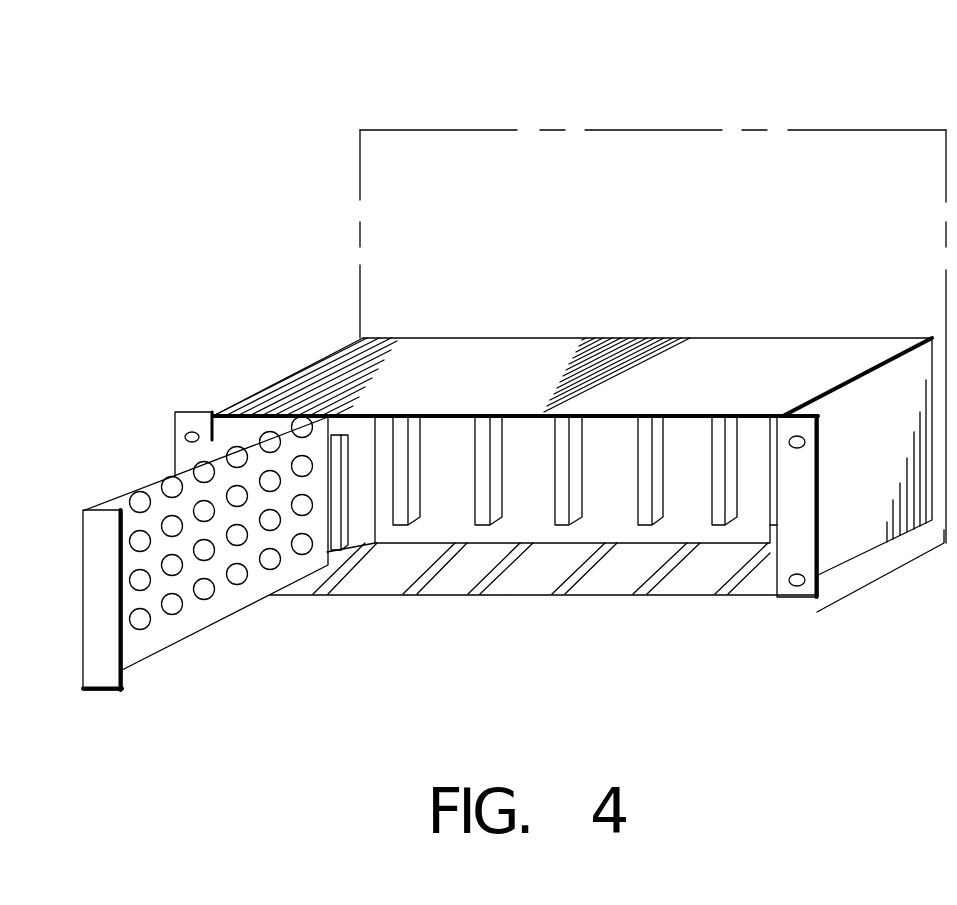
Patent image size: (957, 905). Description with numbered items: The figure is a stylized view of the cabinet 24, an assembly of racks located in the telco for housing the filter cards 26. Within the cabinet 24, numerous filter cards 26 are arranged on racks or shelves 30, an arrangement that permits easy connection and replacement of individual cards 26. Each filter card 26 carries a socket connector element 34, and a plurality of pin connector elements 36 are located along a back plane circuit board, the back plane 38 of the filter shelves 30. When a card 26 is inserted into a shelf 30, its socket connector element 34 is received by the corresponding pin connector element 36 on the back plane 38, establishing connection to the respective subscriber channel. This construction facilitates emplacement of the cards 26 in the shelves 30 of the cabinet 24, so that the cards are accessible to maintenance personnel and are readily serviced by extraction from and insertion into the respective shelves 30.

The cabinet 24 is at (497, 127).
The filter card 26 is at (182, 642).
The shelf 30 is at (452, 582).
The socket connector element 34 is at (352, 507).
The pin connector element 36 is at (718, 525).
The back plane 38 is at (598, 522).